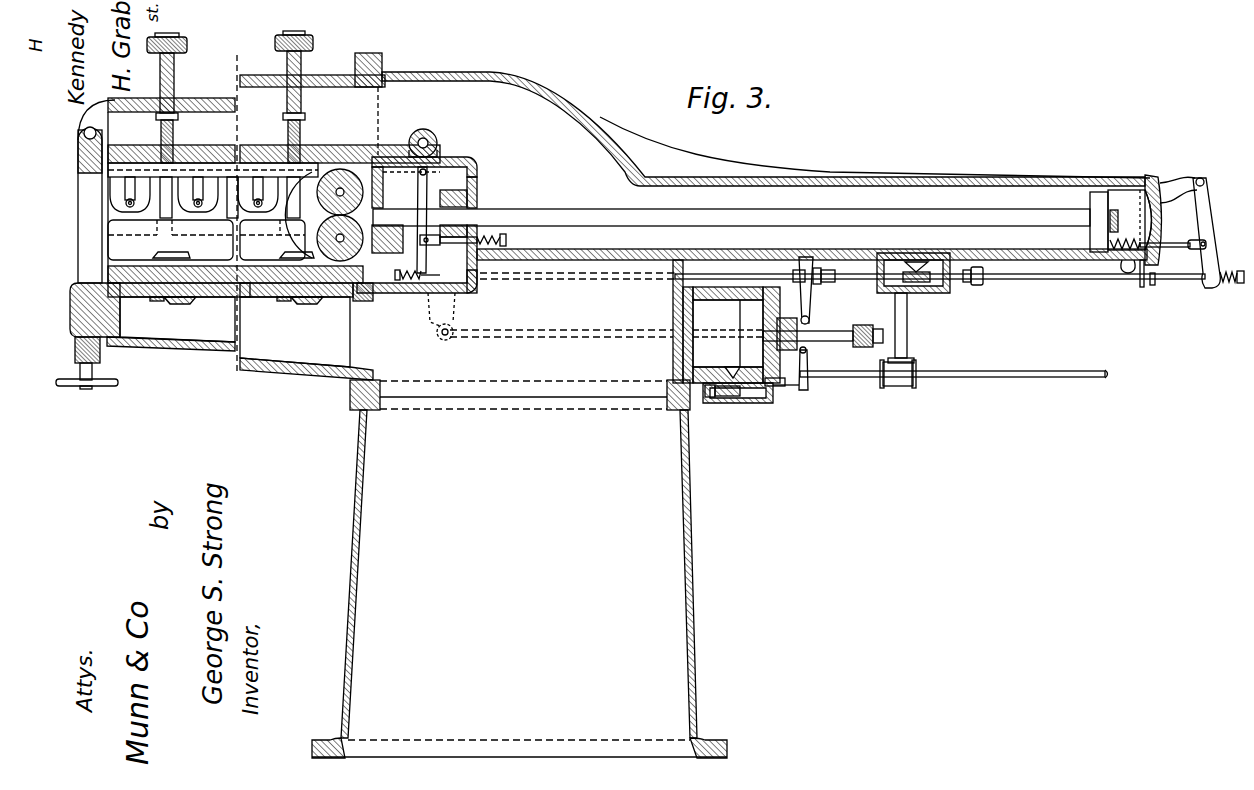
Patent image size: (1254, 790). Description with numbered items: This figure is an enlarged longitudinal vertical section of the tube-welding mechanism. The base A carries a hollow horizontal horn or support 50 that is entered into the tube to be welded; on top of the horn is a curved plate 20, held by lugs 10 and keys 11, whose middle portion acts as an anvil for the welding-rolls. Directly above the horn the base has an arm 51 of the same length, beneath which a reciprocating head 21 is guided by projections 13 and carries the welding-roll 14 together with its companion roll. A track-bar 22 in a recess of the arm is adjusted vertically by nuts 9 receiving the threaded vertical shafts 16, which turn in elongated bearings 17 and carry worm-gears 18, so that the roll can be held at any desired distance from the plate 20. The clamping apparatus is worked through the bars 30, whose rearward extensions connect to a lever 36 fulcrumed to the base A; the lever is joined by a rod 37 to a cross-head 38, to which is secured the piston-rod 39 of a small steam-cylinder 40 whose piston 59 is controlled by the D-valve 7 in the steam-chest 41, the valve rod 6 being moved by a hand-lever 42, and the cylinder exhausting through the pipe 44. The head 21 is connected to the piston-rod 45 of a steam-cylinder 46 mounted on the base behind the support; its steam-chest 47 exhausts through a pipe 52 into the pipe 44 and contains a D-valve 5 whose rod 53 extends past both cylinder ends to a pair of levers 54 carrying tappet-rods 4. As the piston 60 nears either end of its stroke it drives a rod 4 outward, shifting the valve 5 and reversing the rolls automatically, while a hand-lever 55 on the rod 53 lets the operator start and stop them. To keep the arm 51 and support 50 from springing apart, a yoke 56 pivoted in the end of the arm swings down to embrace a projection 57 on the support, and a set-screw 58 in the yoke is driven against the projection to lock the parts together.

The tappet-rods 4 is at (506, 240).
The D-valve 5 is at (913, 283).
The valve rod 6 is at (780, 388).
The D-valve 7 is at (724, 398).
The nuts 9 is at (173, 135).
The lugs 10 is at (192, 302).
The keys 11 is at (156, 301).
The projections 13 is at (316, 236).
The welding-roll 14 is at (324, 213).
The vertical shafts 16 is at (178, 118).
The elongated bearings 17 is at (174, 78).
The worm-gears 18 is at (187, 46).
The plate 20 is at (258, 292).
The reciprocating head 21 is at (417, 225).
The track-bar 22 is at (130, 150).
The bars 30 is at (205, 197).
The lever 36 is at (441, 316).
The rod 37 is at (583, 340).
The cross-head 38 is at (861, 344).
The piston-rod 39 is at (818, 330).
The steam-cylinder 40 is at (726, 321).
The steam-chest 41 is at (750, 405).
The hand-lever 42 is at (802, 388).
The exhaust-pipe 44 is at (954, 374).
The piston-rod 45 is at (731, 218).
The steam-cylinder 46 is at (735, 180).
The steam-chest 47 is at (945, 294).
The horn or support 50 is at (240, 338).
The arm 51 is at (307, 116).
The pipe 52 is at (907, 333).
The valve rod 53 is at (587, 278).
The levers 54 is at (418, 257).
The hand-lever 55 is at (810, 297).
The yoke 56 is at (96, 191).
The projection 57 is at (72, 310).
The set-screw 58 is at (87, 372).
The piston 59 is at (742, 350).
The piston 60 is at (1126, 224).
The base A is at (519, 569).